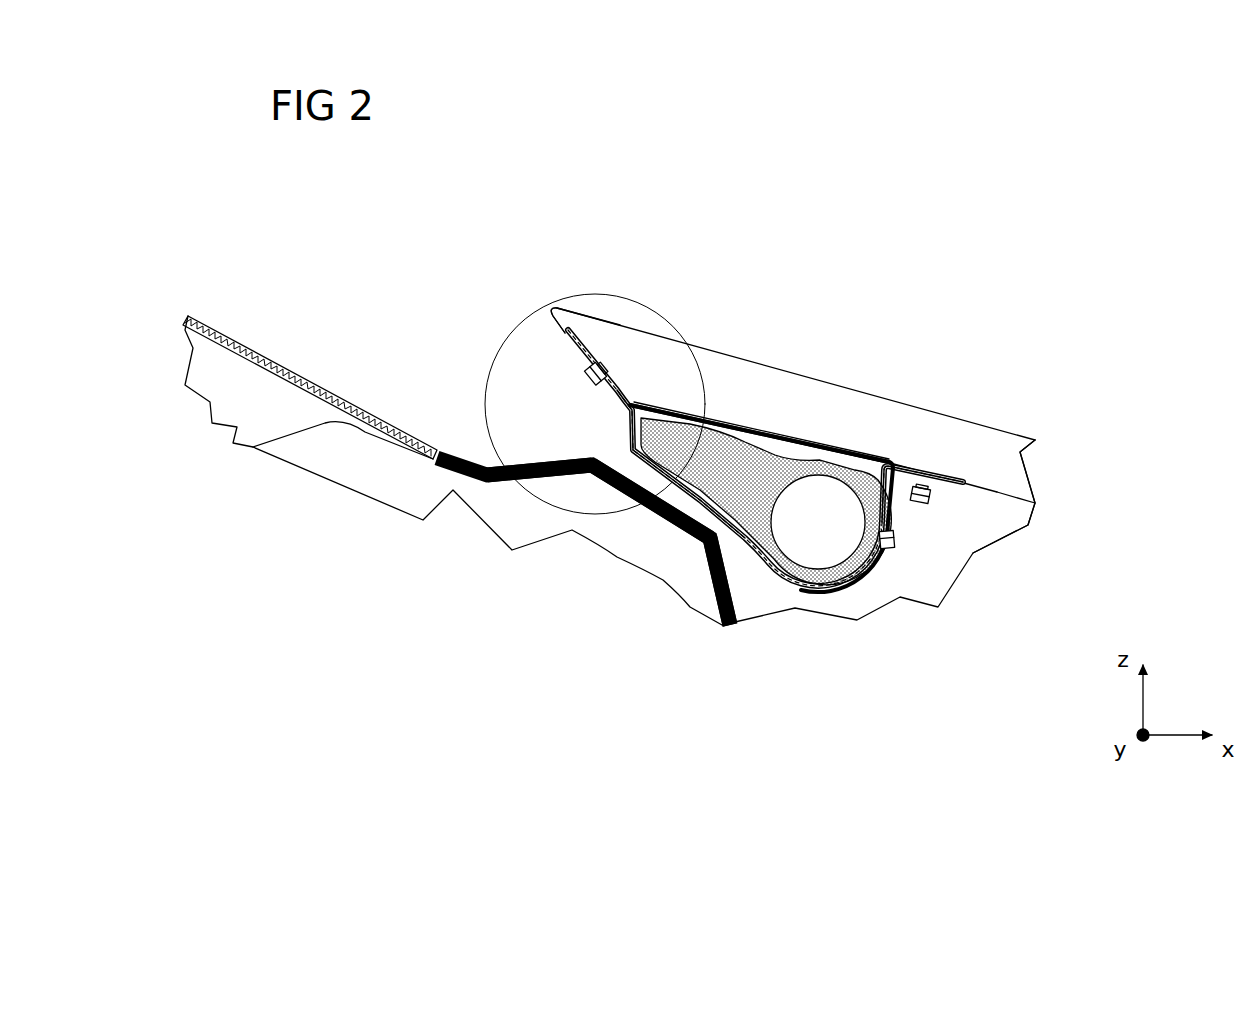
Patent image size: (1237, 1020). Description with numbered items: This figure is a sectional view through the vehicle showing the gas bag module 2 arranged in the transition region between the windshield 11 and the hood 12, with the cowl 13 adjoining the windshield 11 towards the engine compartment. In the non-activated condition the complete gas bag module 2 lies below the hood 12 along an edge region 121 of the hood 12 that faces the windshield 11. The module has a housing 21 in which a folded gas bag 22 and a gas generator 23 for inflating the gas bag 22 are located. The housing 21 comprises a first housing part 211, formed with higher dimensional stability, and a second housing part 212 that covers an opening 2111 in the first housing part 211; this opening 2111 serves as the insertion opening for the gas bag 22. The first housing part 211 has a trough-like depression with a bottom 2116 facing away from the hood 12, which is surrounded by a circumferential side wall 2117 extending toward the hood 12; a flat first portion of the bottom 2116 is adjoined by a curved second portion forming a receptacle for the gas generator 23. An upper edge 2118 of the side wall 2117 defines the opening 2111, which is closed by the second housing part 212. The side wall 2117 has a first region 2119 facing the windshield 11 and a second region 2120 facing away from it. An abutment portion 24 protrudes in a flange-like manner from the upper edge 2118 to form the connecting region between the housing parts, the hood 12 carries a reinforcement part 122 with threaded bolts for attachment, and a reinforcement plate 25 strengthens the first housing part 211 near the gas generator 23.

The gas bag module 2 is at (845, 600).
The windshield 11 is at (320, 387).
The hood 12 is at (813, 388).
The cowl 13 is at (478, 467).
The housing 21 is at (752, 576).
The gas bag 22 is at (748, 452).
The gas generator 23 is at (833, 497).
The abutment portion 24 is at (637, 400).
The reinforcement plate 25 is at (872, 563).
The edge region 121 is at (627, 357).
The reinforcement part 122 is at (997, 492).
The first housing part 211 is at (707, 392).
The second housing part 212 is at (710, 386).
The opening 2111 is at (890, 463).
The bottom 2116 is at (697, 603).
The circumferential side wall 2117 is at (670, 423).
The upper edge 2118 is at (630, 412).
The first region 2119 is at (630, 433).
The second region 2120 is at (892, 480).